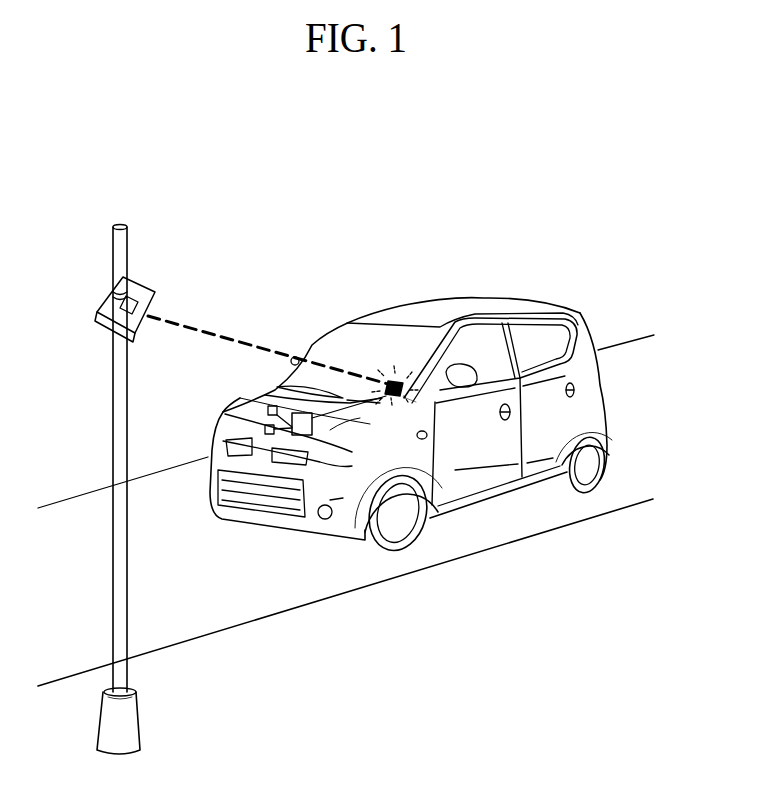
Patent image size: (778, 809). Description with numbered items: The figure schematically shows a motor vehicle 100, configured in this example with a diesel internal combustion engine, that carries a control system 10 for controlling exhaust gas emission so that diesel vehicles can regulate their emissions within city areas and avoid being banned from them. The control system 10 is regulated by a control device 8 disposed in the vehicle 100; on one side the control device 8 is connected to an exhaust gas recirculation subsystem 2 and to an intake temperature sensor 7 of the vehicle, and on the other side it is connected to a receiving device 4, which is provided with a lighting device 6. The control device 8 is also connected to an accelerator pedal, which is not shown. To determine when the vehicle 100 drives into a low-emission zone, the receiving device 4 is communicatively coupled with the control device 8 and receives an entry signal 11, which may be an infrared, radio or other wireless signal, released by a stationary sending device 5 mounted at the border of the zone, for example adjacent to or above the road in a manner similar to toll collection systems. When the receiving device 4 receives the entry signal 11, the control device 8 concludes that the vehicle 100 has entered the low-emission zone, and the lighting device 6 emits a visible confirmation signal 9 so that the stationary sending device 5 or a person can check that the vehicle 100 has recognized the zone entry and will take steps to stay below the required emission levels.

The motor vehicle 100 is at (394, 440).
The stationary sending device 5 is at (143, 287).
The entry signal 11 is at (240, 334).
The confirmation signal 9 is at (399, 361).
The exhaust gas recirculation subsystem 2 is at (268, 406).
The intake temperature sensor 7 is at (265, 429).
The control device 8 is at (300, 435).
The control system 10 is at (252, 505).
The receiving device 4 is at (468, 521).
The lighting device 6 is at (412, 400).